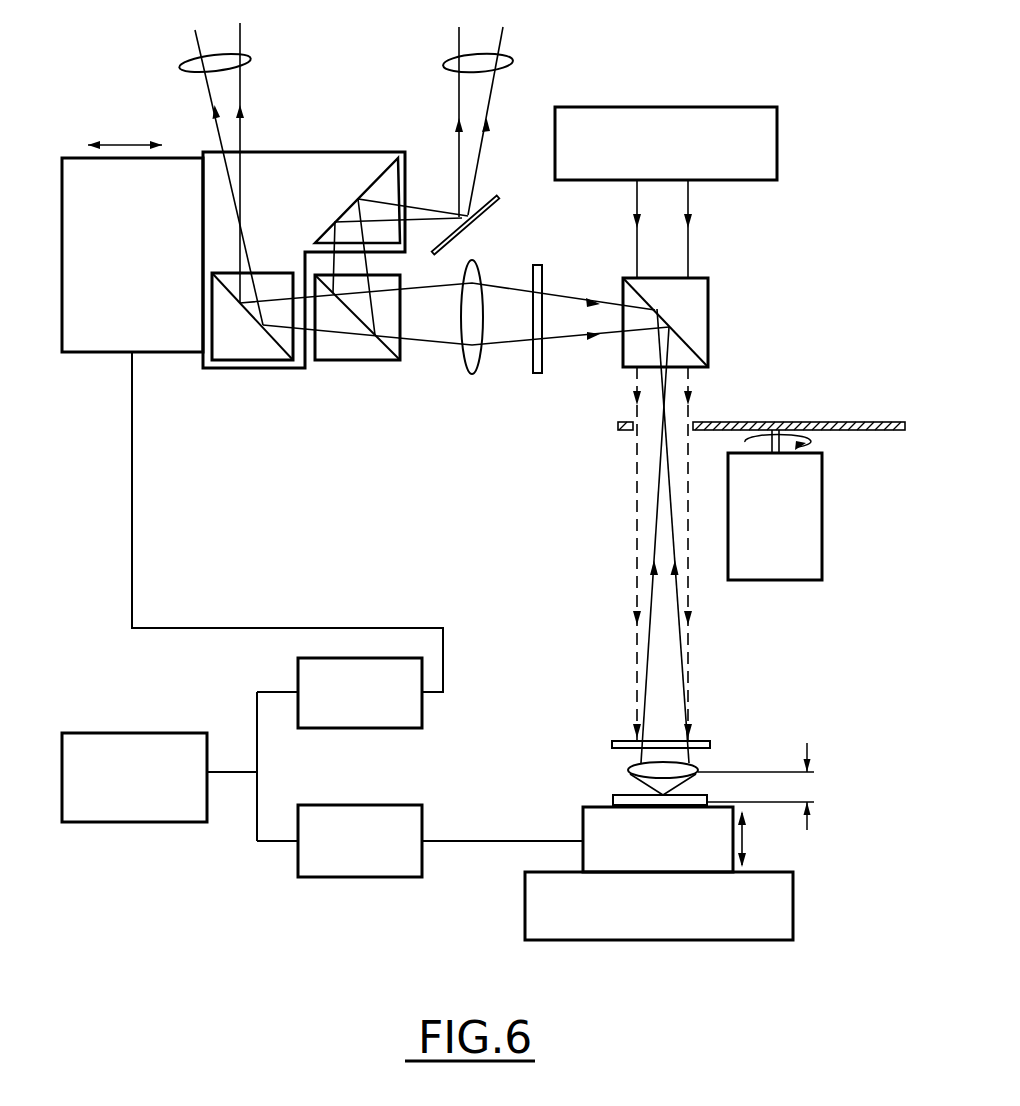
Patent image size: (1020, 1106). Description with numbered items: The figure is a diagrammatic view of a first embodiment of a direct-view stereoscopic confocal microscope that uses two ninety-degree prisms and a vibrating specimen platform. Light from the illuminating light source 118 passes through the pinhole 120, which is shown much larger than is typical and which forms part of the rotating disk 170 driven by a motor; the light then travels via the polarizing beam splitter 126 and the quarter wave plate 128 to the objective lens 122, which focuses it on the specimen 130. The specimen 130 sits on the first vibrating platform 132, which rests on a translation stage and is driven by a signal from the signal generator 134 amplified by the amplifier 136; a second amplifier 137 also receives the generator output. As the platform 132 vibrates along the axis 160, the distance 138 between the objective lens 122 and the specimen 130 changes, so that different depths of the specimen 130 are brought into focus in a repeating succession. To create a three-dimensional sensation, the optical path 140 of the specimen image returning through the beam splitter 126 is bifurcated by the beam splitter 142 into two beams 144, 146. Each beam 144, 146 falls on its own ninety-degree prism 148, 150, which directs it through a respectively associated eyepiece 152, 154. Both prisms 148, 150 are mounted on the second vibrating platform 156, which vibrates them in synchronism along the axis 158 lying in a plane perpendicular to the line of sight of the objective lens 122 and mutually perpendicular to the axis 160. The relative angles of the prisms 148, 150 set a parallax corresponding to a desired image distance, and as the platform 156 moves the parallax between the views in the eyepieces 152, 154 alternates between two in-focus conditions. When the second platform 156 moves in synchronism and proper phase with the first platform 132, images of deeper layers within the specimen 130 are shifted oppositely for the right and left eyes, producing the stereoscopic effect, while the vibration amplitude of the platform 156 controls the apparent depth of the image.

The illuminating light source 118 is at (777, 143).
The pinhole 120 is at (635, 422).
The objective lens 122 is at (706, 763).
The polarizing beam splitter 126 is at (708, 318).
The quarter wave plate 128 is at (702, 738).
The specimen 130 is at (615, 796).
The first vibrating platform 132 is at (582, 824).
The signal generator 134 is at (108, 822).
The amplifier 136 is at (380, 877).
The amplifier 137 is at (422, 720).
The distance 138 is at (810, 789).
The optical path 140 is at (565, 333).
The beam splitter 142 is at (306, 362).
The beam 144 is at (230, 182).
The beam 146 is at (463, 93).
The 90 degree prism 148 is at (270, 332).
The 90 degree prism 150 is at (408, 142).
The eyepiece 152 is at (240, 54).
The eyepiece 154 is at (513, 62).
The second vibrating platform 156 is at (113, 353).
The axis 158 is at (143, 113).
The axis 160 is at (745, 840).
The disk 170 is at (863, 420).